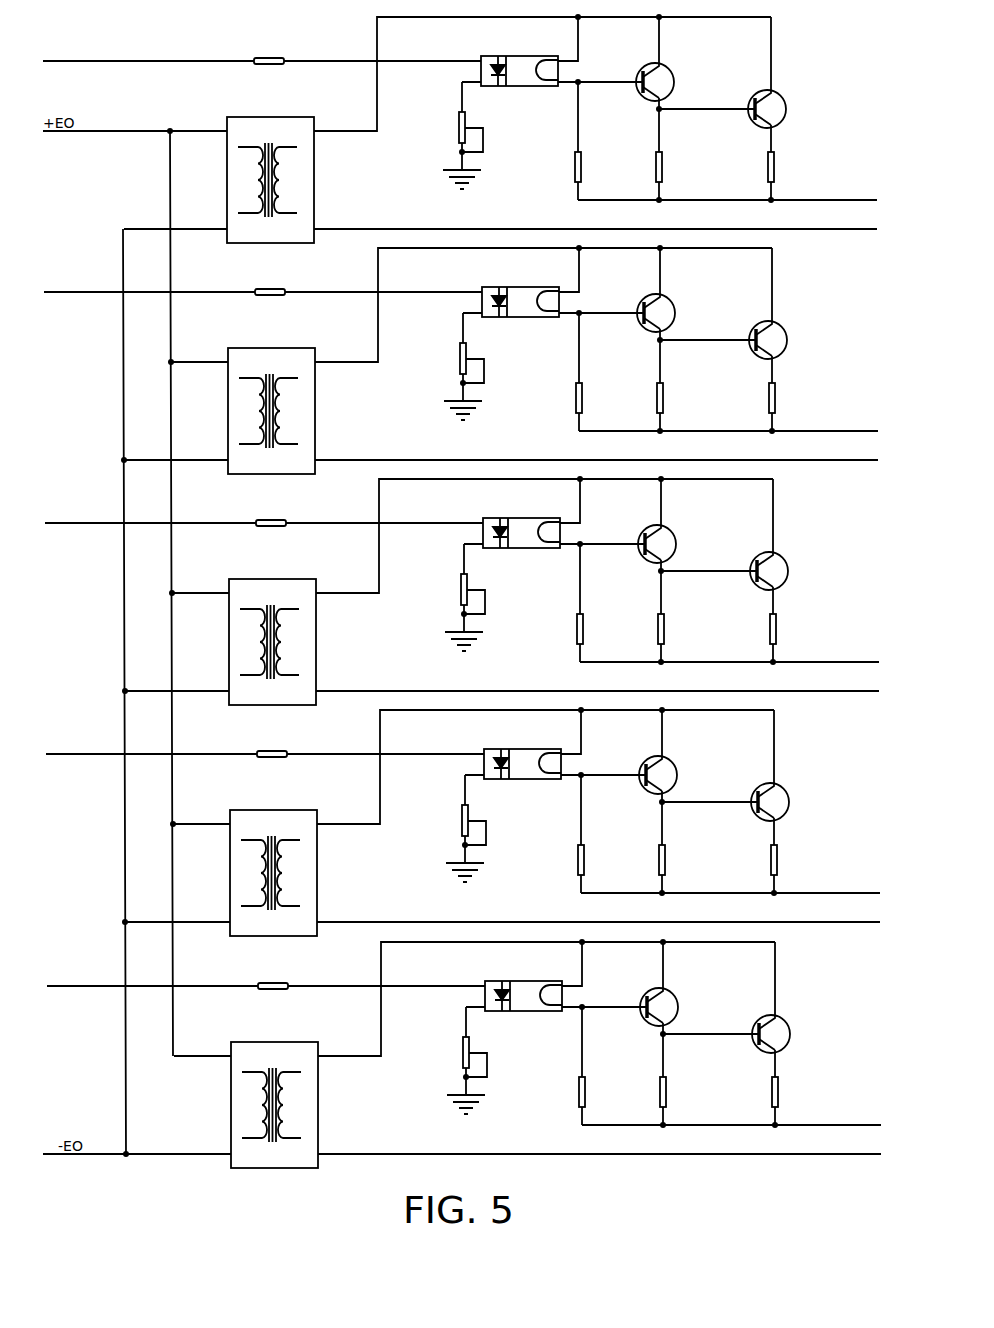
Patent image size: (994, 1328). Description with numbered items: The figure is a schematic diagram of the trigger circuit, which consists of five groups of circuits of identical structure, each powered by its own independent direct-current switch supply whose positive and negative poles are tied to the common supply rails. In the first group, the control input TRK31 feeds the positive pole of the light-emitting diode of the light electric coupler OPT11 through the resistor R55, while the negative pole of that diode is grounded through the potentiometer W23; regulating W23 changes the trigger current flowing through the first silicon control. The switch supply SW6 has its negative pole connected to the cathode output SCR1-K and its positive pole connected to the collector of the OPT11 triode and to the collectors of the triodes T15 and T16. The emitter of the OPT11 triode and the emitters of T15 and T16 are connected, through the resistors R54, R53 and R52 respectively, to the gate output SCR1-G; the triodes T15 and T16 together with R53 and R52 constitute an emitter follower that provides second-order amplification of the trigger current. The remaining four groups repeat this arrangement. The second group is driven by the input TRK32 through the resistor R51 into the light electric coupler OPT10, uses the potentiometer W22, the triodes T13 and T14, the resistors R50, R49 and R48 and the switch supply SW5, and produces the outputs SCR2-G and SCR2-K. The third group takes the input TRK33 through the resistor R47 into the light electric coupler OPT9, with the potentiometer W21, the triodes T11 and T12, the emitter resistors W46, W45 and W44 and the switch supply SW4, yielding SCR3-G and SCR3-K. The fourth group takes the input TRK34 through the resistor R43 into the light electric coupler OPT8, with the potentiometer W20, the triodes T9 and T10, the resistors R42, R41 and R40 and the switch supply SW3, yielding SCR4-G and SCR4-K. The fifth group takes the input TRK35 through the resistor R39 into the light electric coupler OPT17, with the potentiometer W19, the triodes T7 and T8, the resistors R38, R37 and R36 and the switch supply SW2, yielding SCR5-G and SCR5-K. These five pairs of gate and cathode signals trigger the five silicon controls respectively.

The trigger input 31 TRK31 is at (65, 51).
The resistor R55 is at (269, 52).
The switch supply SW6 is at (270, 168).
The light electric coupler OPT11 is at (519, 63).
The potentiometer W23 is at (471, 135).
The triode T15 is at (645, 59).
The triode T16 is at (756, 72).
The resistor R54 is at (594, 158).
The resistor R53 is at (675, 158).
The resistor R52 is at (786, 158).
The trigger signal SCR1-G is at (727, 192).
The trigger signal SCR1-K is at (595, 220).
The trigger input 32 TRK32 is at (66, 282).
The resistor R51 is at (270, 283).
The switch supply SW5 is at (271, 399).
The light electric coupler OPT10 is at (520, 294).
The potentiometer W22 is at (472, 366).
The triode T13 is at (646, 290).
The triode T14 is at (757, 303).
The resistor R50 is at (595, 389).
The resistor R49 is at (676, 389).
The resistor R48 is at (787, 389).
The trigger signal SCR2-G is at (728, 423).
The trigger signal SCR2-K is at (596, 451).
The trigger input 33 TRK33 is at (67, 513).
The resistor R47 is at (271, 514).
The switch supply SW4 is at (272, 630).
The light electric coupler OPT9 is at (521, 525).
The potentiometer W21 is at (473, 597).
The triode T11 is at (647, 521).
The triode T12 is at (758, 534).
The resistor W46 is at (598, 620).
The resistor W45 is at (679, 620).
The resistor W44 is at (790, 620).
The trigger signal SCR3-G is at (729, 654).
The trigger signal SCR3-K is at (597, 682).
The trigger input 34 TRK34 is at (68, 744).
The resistor R43 is at (272, 745).
The switch supply SW3 is at (273, 861).
The light electric coupler OPT8 is at (522, 756).
The potentiometer W20 is at (474, 828).
The triode T9 is at (648, 752).
The triode T10 is at (759, 765).
The resistor R42 is at (597, 851).
The resistor R41 is at (678, 851).
The resistor R40 is at (789, 851).
The trigger signal SCR4-G is at (730, 885).
The trigger signal SCR4-K is at (598, 913).
The trigger input 35 TRK35 is at (69, 976).
The resistor R39 is at (273, 977).
The switch supply SW2 is at (274, 1093).
The optocoupler OPT17 is at (523, 988).
The potentiometer W19 is at (475, 1060).
The triode T7 is at (649, 984).
The triode T8 is at (760, 997).
The resistor R38 is at (598, 1083).
The resistor R37 is at (679, 1083).
The resistor R36 is at (790, 1083).
The trigger signal SCR5-G is at (731, 1117).
The trigger signal SCR5-K is at (599, 1145).